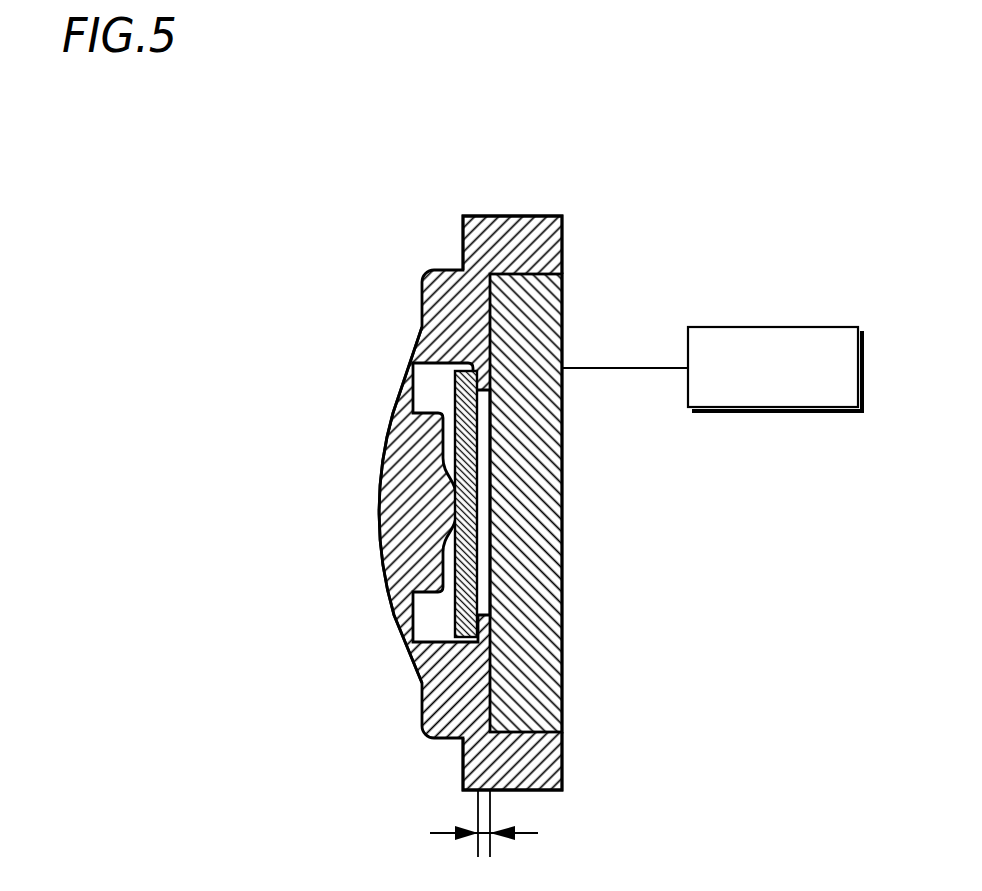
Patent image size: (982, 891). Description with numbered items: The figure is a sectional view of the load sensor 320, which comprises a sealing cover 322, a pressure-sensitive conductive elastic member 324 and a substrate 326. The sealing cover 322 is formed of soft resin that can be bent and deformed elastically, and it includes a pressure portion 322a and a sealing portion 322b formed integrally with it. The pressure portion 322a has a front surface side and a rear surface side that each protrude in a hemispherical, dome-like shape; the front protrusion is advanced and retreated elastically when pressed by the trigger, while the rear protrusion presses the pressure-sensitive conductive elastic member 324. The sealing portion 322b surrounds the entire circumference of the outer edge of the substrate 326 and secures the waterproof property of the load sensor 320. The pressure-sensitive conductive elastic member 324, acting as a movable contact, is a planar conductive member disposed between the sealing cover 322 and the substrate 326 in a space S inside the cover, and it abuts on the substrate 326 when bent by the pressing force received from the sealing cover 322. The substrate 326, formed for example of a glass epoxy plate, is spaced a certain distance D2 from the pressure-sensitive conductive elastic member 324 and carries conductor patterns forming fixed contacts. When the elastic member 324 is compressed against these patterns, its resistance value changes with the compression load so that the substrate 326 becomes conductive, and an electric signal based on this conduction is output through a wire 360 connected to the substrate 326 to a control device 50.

The load sensor 320 is at (630, 174).
The sealing cover 322 is at (355, 413).
The pressure portion 322a is at (378, 530).
The sealing portion 322b is at (463, 240).
The space (gap inside lens housing) S is at (410, 614).
The pressure-sensitive conductive elastic member 324 is at (478, 542).
The substrate 326 is at (543, 667).
The wire 360 is at (622, 368).
The control device 50 is at (798, 327).
The distance D2 is at (484, 841).